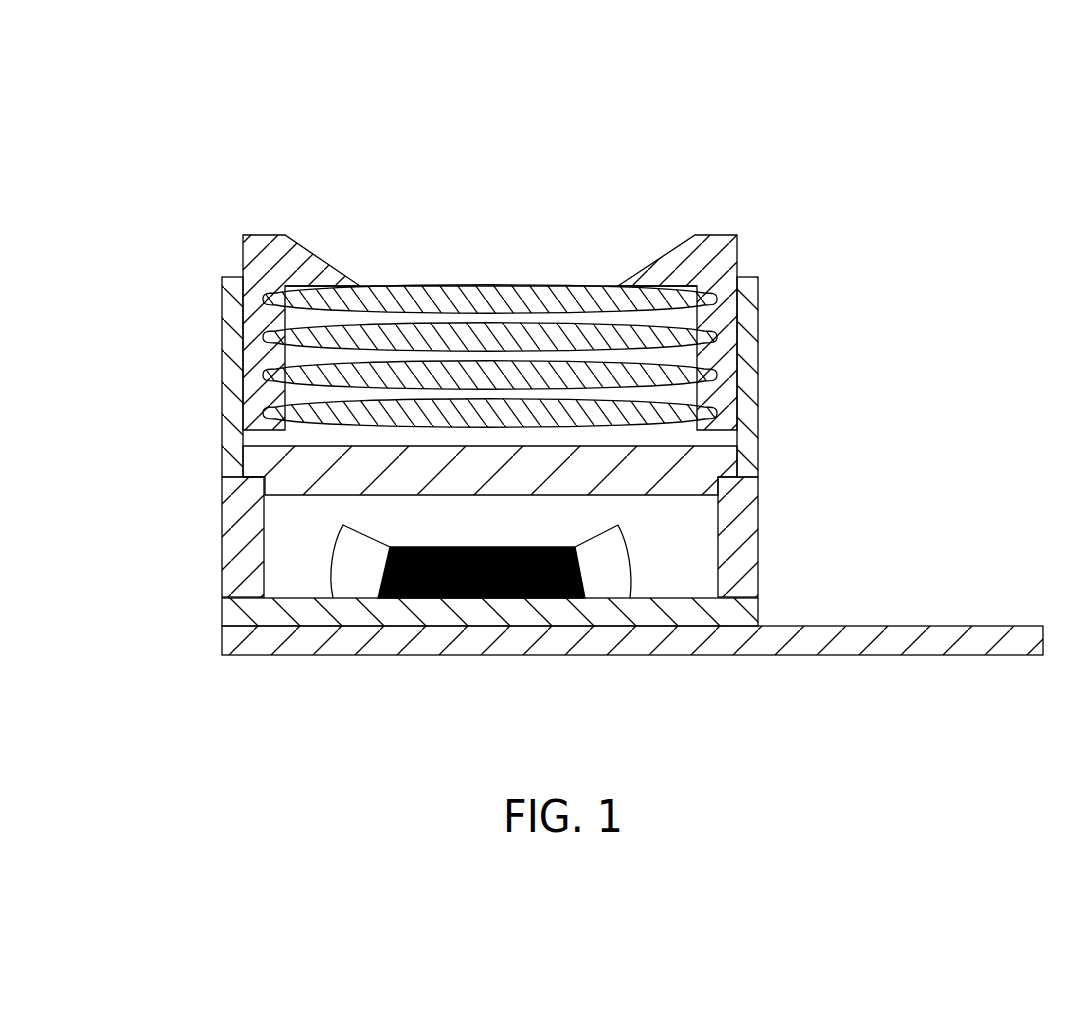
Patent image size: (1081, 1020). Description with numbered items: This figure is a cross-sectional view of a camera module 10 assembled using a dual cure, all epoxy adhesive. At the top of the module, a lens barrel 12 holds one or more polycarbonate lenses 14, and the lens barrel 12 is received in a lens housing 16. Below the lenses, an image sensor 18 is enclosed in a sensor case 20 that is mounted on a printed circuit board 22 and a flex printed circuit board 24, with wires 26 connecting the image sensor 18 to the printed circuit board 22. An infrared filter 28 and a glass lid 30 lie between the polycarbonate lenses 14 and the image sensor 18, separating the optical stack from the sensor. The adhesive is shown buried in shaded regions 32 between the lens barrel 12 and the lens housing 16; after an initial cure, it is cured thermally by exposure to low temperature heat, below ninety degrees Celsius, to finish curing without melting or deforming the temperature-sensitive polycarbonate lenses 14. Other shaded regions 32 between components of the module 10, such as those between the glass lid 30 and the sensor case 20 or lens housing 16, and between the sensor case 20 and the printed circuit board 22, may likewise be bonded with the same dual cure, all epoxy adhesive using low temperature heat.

The camera module 10 is at (847, 110).
The lens barrel 12 is at (723, 245).
The polycarbonate lenses 14 is at (468, 340).
The lens housing 16 is at (237, 322).
The image sensor 18 is at (583, 577).
The sensor case 20 is at (743, 510).
The printed circuit board 22 is at (292, 618).
The flex printed circuit board 24 is at (850, 643).
The wires 26 is at (335, 557).
The infrared filter 28 is at (693, 447).
The glass lid 30 is at (277, 462).
The shaded regions 32 is at (737, 322).